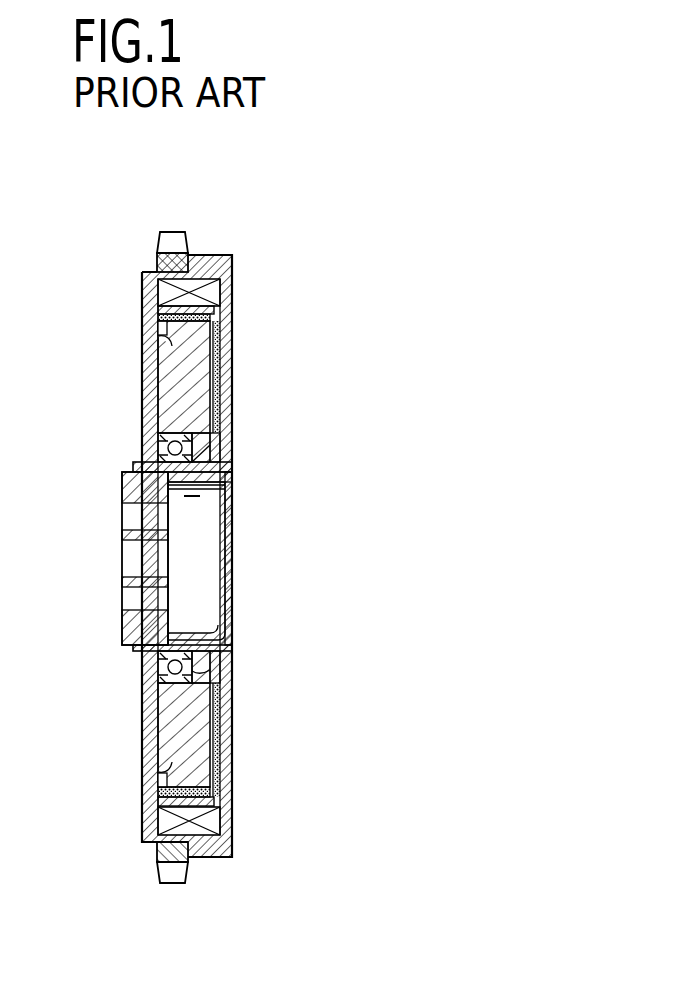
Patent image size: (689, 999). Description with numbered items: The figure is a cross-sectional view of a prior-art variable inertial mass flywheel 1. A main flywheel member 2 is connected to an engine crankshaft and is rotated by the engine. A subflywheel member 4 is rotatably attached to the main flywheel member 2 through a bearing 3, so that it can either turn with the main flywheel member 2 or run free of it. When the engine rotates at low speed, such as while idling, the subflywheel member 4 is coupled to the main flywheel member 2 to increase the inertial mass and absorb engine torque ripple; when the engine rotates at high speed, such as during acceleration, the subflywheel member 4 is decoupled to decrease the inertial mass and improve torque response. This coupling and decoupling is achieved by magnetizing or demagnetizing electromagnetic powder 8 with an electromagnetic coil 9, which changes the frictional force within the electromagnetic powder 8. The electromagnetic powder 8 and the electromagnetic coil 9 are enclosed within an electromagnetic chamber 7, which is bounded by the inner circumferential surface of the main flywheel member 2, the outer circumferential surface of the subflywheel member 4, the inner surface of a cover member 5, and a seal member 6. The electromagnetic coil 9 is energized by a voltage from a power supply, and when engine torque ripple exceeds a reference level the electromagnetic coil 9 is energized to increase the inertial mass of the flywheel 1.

The variable inertial mass flywheel 1 is at (263, 252).
The main flywheel member 2 is at (233, 396).
The bearing 3 is at (165, 445).
The subflywheel member 4 is at (160, 370).
The cover member 5 is at (156, 297).
The seal member 6 is at (160, 343).
The electromagnetic chamber 7 is at (220, 312).
The electromagnetic powder 8 is at (159, 780).
The electromagnetic coil 9 is at (163, 820).